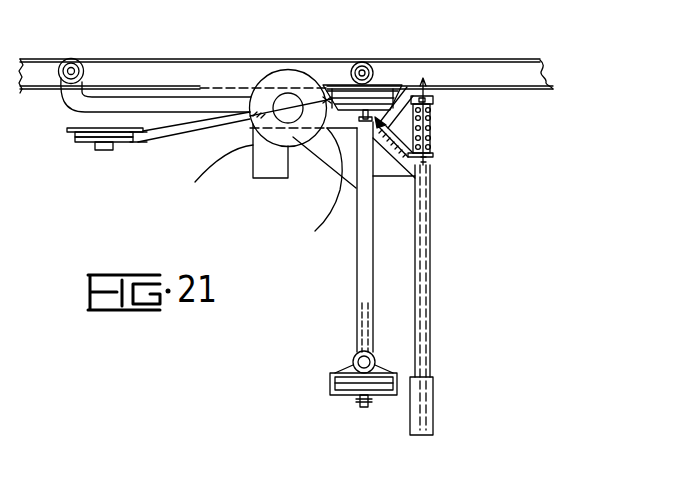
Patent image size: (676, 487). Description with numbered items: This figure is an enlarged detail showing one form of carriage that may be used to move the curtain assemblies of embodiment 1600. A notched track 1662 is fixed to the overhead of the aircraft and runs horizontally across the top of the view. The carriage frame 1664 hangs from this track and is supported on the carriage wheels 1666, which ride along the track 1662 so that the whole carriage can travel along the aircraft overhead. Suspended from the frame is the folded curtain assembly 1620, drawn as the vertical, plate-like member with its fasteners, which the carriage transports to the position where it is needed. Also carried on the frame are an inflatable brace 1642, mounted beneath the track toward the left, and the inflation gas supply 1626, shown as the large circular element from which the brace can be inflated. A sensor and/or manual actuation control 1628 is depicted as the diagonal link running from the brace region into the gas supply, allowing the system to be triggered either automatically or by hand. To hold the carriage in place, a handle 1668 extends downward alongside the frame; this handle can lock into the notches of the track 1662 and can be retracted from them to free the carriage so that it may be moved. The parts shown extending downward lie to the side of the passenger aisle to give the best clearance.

The embodiment 1600 is at (259, 50).
The folded curtain assembly 1620 is at (387, 371).
The inflation gas supply 1626 is at (300, 148).
The sensor and/or manual actuation control 1628 is at (220, 153).
The inflatable brace 1642 is at (108, 151).
The notched track 1662 is at (177, 58).
The carriage frame 1664 is at (357, 260).
The carriage wheels 1666 is at (78, 60).
The handle 1668 is at (433, 378).